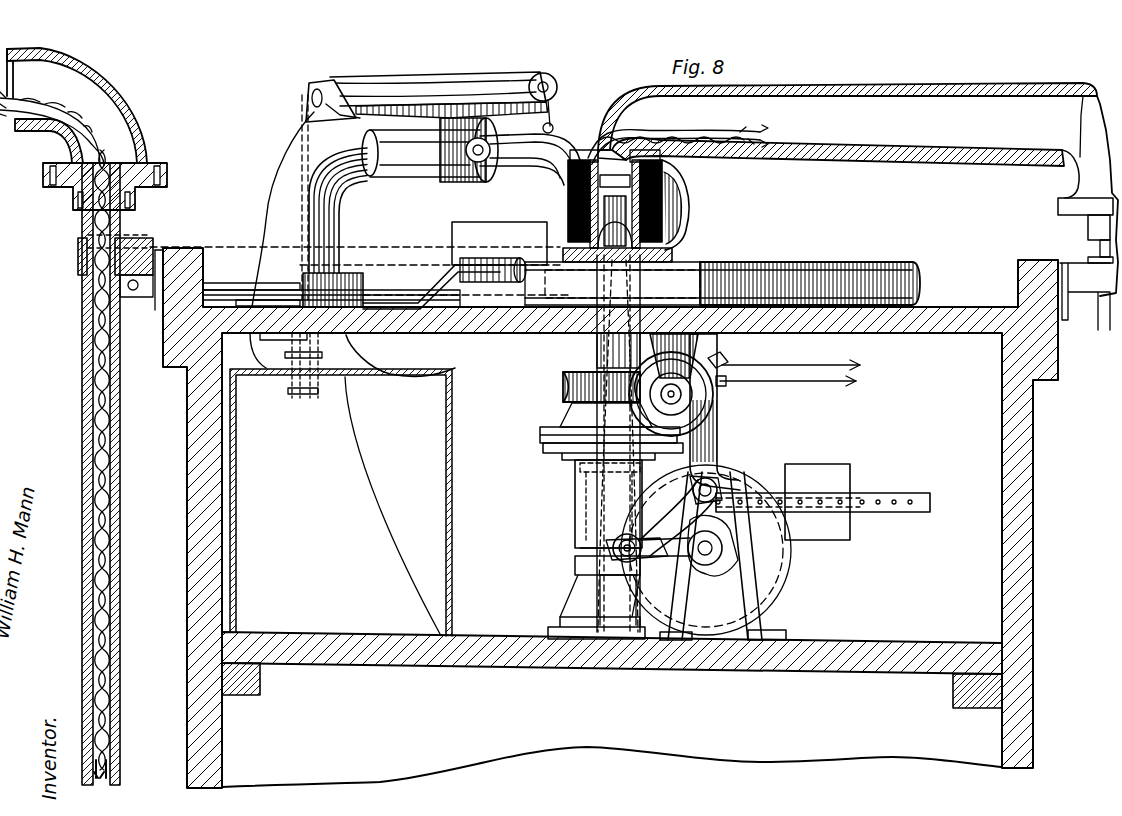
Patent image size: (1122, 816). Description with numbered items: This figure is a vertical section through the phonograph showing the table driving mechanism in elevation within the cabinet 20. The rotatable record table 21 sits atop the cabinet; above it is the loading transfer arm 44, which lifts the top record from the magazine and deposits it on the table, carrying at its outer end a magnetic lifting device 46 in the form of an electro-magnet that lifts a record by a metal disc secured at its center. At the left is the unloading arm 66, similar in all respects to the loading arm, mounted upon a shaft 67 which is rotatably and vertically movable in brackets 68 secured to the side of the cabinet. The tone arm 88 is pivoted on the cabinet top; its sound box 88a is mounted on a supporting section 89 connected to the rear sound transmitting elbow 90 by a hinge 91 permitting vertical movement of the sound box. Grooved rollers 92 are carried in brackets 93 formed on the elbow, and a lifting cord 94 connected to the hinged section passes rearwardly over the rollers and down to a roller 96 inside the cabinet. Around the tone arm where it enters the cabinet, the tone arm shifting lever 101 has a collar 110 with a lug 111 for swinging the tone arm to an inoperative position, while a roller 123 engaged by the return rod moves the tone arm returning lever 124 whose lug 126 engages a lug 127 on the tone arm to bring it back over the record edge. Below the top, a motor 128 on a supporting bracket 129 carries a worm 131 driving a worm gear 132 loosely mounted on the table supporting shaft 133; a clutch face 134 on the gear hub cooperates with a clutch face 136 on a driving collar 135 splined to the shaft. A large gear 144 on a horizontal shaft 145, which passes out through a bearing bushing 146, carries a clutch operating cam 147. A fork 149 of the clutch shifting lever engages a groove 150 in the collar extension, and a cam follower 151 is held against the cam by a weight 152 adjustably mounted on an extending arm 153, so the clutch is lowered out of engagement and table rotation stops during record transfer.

The cabinet 20 is at (1008, 507).
The record table 21 is at (918, 294).
The loading transfer arm 44 is at (972, 88).
The magnetic lifting device 46 is at (684, 192).
The unloading arm 66 is at (118, 90).
The shaft 67 is at (84, 350).
The brackets 68 is at (78, 258).
The tone arm 88 is at (290, 122).
The sound box 88a is at (668, 162).
The supporting section 89 is at (565, 140).
The sound transmitting elbow 90 is at (398, 164).
The hinge 91 is at (472, 180).
The grooved rollers 92 is at (431, 97).
The brackets 93 is at (452, 110).
The lifting cord 94 is at (436, 80).
The roller 96 is at (316, 392).
The tone arm shifting lever 101 is at (218, 284).
The collar 110 is at (252, 250).
The lug 111 is at (248, 296).
The roller 123 is at (528, 250).
The tone arm returning lever 124 is at (420, 266).
The lug 126 is at (350, 342).
The lug 127 is at (300, 275).
The motor 128 is at (700, 406).
The supporting bracket 129 is at (712, 440).
The worm 131 is at (712, 392).
The worm gear 132 is at (565, 390).
The table supporting shaft 133 is at (600, 352).
The clutch face 134 is at (542, 431).
The driving collar 135 is at (590, 480).
The clutch face 136 is at (548, 449).
The large gear 144 is at (765, 592).
The horizontal shaft 145 is at (646, 548).
The bearing bushing 146 is at (678, 492).
The clutch operating cam 147 is at (730, 560).
The fork 149 is at (592, 574).
The groove 150 is at (600, 548).
The cam follower 151 is at (716, 494).
The weight 152 is at (840, 470).
The extending arm 153 is at (880, 496).